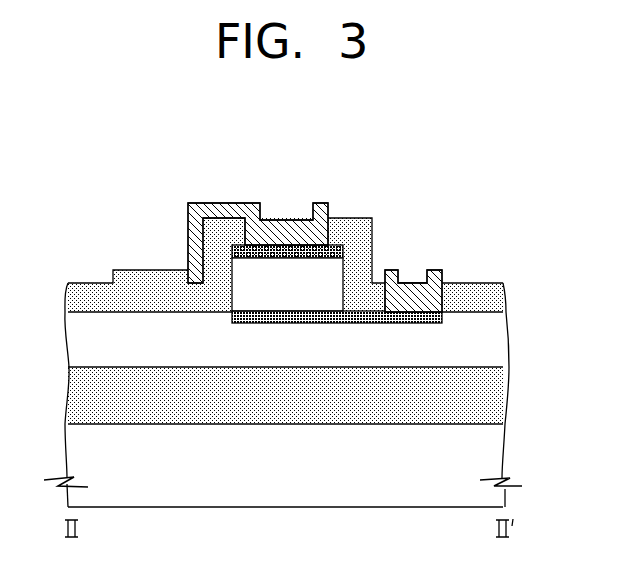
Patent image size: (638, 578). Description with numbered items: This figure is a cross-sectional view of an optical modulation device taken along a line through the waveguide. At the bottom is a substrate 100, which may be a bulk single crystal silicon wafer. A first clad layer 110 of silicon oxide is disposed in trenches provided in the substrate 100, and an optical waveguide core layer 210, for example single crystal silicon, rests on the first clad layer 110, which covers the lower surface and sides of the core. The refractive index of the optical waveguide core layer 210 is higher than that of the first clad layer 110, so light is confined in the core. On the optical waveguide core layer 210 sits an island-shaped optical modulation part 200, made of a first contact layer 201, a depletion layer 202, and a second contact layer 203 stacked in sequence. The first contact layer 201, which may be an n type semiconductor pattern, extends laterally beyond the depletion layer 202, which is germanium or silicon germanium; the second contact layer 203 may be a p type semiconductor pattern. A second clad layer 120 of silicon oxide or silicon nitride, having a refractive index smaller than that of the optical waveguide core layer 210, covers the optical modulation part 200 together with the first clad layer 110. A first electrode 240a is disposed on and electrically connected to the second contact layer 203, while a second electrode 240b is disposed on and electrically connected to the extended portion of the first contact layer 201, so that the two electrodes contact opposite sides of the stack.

The substrate 100 is at (493, 450).
The first clad layer 110 is at (493, 395).
The second clad layer 120 is at (493, 296).
The optical waveguide core layer 210 is at (493, 340).
The optical modulation part 200 is at (239, 253).
The first contact layer 201 is at (231, 317).
The depletion layer 202 is at (231, 278).
The second contact layer 203 is at (231, 250).
The first electrode 240a is at (286, 228).
The second electrode 240b is at (409, 295).